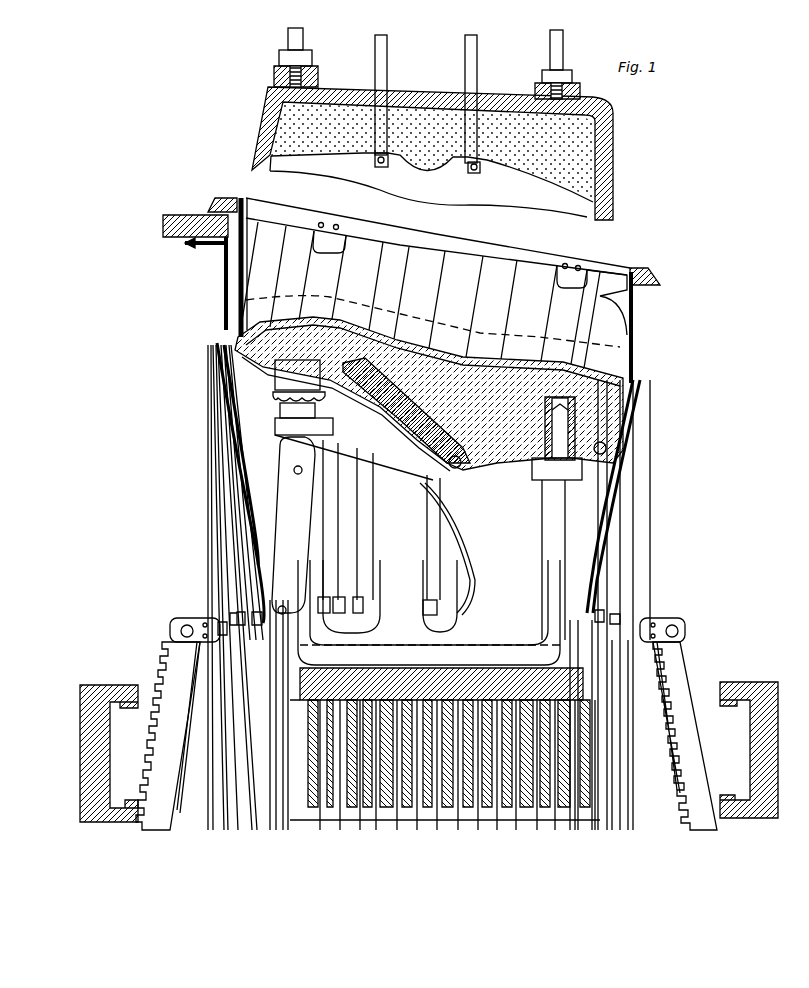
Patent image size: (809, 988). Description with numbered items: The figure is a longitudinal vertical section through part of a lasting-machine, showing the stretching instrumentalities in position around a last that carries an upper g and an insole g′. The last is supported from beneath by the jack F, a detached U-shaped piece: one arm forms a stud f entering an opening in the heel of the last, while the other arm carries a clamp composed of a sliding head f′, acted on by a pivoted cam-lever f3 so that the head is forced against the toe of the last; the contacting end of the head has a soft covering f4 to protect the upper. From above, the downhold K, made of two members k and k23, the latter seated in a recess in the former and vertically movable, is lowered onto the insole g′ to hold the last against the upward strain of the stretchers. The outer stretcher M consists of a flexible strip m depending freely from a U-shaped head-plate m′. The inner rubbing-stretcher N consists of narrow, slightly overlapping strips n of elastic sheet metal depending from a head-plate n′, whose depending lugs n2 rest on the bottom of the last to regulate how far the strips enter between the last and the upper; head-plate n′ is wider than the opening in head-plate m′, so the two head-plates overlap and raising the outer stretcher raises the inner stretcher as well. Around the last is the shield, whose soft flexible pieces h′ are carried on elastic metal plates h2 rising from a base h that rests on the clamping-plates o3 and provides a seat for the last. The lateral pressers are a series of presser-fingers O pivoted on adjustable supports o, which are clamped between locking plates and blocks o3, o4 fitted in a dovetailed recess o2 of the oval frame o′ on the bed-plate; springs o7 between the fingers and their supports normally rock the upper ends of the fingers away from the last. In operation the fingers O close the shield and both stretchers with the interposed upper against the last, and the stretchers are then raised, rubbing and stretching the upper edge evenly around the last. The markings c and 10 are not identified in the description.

The downhold K is at (435, 96).
The downhold member k is at (607, 178).
The downhold member k23 is at (466, 170).
The head-plate m′ is at (196, 222).
The head-plate n′ is at (222, 200).
The outer stretcher M is at (640, 316).
The strip m is at (224, 287).
The inner rubbing-stretcher N is at (246, 280).
The strips n is at (435, 283).
The depending lugs n2 is at (450, 269).
The upper g is at (463, 478).
The insole g′ is at (482, 362).
The base h is at (582, 650).
The shield pieces h′ is at (209, 333).
The elastic metal plates h2 is at (195, 340).
The stud f is at (560, 428).
The jack F is at (540, 528).
The sliding head f′ is at (304, 417).
The pivoted cam-lever f3 is at (282, 478).
The covering f4 is at (299, 380).
The pin c is at (523, 452).
The presser-fingers O is at (345, 533).
The adjustable supports o is at (206, 405).
The frame o′ is at (80, 690).
The dovetailed recess o2 is at (120, 704).
The locking plates o3 is at (474, 810).
The locking blocks o4 is at (436, 762).
The springs o7 is at (196, 752).
The side rod 10 is at (652, 470).